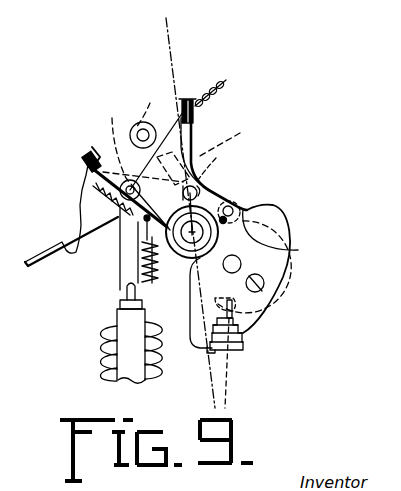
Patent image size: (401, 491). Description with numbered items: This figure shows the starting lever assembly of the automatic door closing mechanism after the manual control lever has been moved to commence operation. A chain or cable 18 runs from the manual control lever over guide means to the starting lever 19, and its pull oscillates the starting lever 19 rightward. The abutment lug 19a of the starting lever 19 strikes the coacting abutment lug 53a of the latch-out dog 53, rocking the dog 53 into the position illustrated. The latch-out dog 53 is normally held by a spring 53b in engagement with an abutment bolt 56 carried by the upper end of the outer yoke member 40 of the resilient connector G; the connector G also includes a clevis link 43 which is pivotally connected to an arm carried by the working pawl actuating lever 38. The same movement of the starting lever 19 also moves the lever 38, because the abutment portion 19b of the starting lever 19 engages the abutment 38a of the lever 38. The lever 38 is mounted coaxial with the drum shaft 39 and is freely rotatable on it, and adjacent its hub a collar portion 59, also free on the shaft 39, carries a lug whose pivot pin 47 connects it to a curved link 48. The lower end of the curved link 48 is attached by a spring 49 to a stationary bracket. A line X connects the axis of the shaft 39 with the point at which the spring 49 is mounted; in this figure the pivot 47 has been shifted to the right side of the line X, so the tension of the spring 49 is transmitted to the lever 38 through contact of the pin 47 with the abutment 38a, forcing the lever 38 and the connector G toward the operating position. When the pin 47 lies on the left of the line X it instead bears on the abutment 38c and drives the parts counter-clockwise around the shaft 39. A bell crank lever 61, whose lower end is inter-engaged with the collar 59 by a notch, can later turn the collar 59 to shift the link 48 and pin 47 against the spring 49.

The chain or cable 18 is at (226, 82).
The starting lever 19 is at (197, 136).
The abutment lug 19a is at (87, 172).
The abutment portion 19b is at (243, 208).
The working pawl actuating lever 38 is at (172, 128).
The abutment 38a is at (298, 250).
The abutment 38c is at (143, 140).
The drum shaft 39 is at (192, 232).
The outer yoke member 40 is at (122, 383).
The clevis link 43 is at (123, 275).
The pivot or abutment pin 47 is at (238, 206).
The curved link 48 is at (283, 230).
The spring 49 is at (247, 333).
The latch-out dog 53 is at (77, 226).
The abutment lug 53a is at (92, 147).
The spring 53b is at (115, 228).
The abutment bolt 56 is at (138, 293).
The collar portion 59 is at (216, 158).
The bell crank lever 61 is at (240, 133).
The resilient connector G is at (136, 381).
The line x X is at (168, 28).